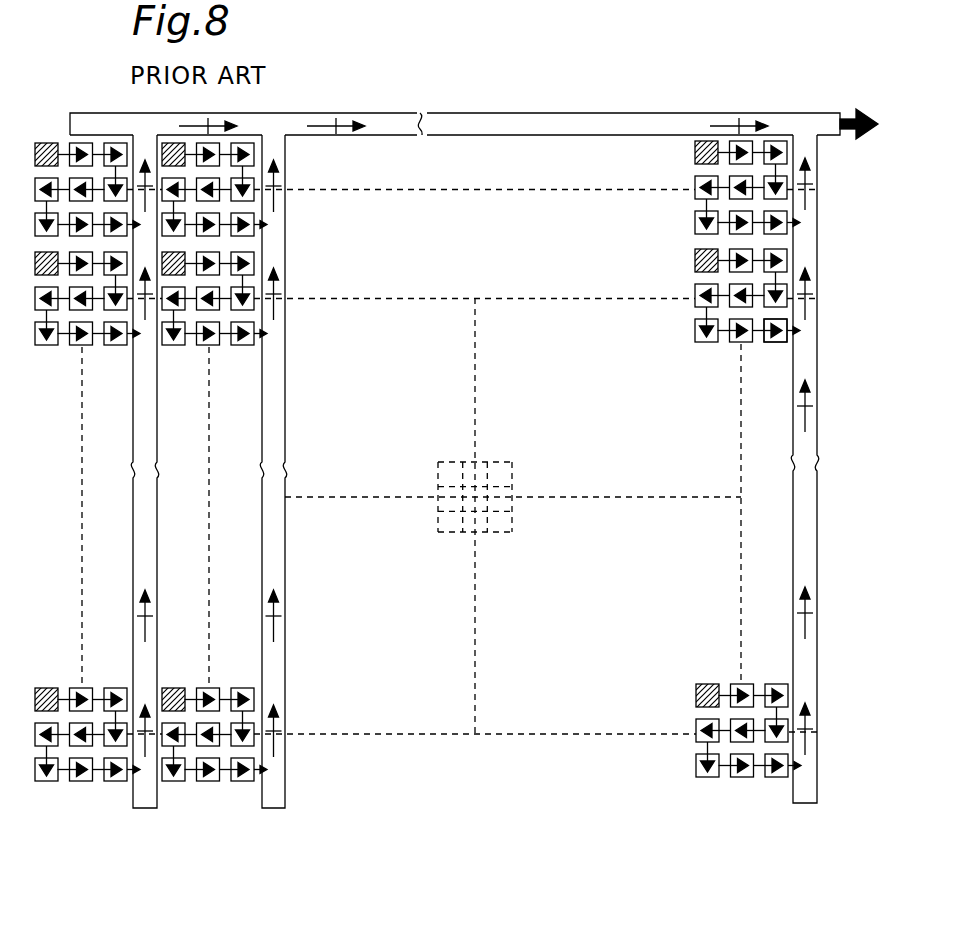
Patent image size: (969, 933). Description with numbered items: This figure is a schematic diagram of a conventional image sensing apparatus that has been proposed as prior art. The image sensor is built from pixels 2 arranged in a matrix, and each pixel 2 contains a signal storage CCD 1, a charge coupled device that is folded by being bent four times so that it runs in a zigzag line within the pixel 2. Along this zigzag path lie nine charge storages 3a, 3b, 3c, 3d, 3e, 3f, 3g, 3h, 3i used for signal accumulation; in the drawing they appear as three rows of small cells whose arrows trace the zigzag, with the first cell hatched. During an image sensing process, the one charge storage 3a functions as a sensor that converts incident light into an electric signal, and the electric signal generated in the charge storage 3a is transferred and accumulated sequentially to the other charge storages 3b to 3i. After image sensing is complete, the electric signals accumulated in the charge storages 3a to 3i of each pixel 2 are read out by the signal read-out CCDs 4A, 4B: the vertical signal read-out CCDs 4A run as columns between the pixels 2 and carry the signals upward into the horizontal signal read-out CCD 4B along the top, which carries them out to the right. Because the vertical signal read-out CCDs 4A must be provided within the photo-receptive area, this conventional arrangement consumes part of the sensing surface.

The signal storage CCD 1 is at (777, 342).
The pixel 2 is at (739, 266).
The charge storage 3a is at (693, 262).
The charge storage 3b is at (745, 253).
The charge storage 3c is at (788, 261).
The charge storage 3d is at (782, 300).
The charge storage 3e is at (736, 288).
The charge storage 3f is at (695, 298).
The charge storage 3g is at (695, 335).
The charge storage 3h is at (737, 342).
The charge storage 3i is at (770, 342).
The signal read-out CCD 4A is at (286, 402).
The signal read-out CCD 4B is at (528, 113).